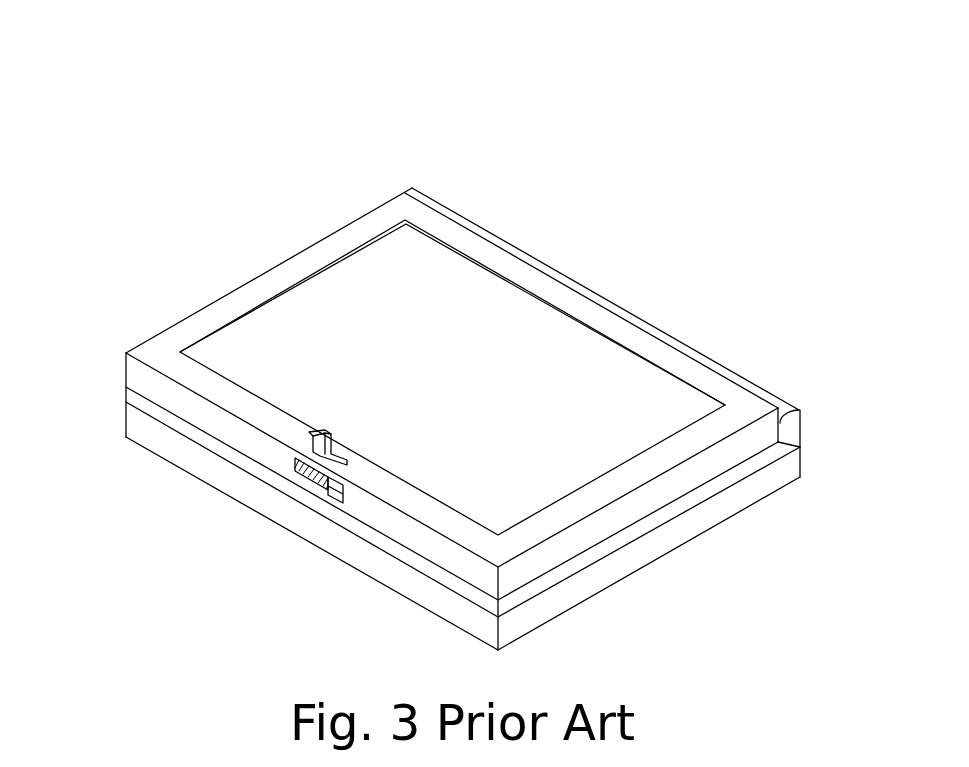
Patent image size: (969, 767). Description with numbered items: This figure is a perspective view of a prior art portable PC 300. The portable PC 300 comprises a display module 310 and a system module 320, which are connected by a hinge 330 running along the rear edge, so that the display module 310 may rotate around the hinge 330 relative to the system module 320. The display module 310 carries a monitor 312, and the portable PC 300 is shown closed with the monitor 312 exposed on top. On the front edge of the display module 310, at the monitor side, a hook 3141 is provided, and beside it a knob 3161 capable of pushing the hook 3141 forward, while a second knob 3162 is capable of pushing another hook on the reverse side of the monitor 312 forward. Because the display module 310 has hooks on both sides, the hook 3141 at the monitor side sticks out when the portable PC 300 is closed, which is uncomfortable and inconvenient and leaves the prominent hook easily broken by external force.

The portable PC 300 is at (769, 128).
The display module 310 is at (200, 290).
The monitor 312 is at (305, 313).
The hook 3141 is at (352, 408).
The system module 320 is at (153, 450).
The hinge 330 is at (593, 300).
The knob 3161 is at (297, 459).
The knob 3162 is at (328, 481).